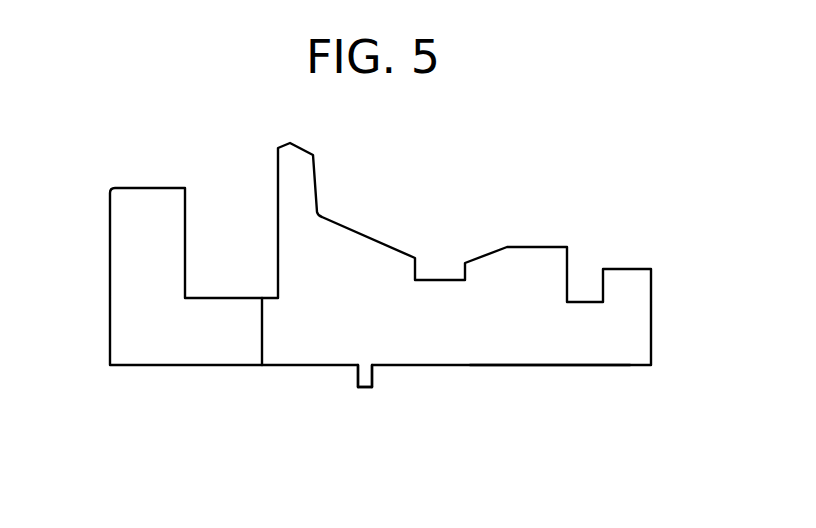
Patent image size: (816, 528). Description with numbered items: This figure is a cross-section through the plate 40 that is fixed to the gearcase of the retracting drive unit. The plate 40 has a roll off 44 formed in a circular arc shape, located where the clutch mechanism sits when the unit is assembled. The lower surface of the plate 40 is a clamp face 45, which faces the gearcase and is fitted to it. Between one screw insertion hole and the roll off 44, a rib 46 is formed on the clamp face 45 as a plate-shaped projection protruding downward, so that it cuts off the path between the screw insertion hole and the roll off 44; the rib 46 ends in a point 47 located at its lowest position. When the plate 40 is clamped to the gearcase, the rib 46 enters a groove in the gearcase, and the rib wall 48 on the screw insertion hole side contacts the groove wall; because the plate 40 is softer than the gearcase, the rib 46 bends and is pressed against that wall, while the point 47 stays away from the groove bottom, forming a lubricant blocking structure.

The plate 40 is at (470, 193).
The roll off 44 is at (262, 337).
The clamp face 45 is at (502, 366).
The rib 46 is at (360, 388).
The point 47 is at (362, 389).
The rib wall 48 is at (373, 380).